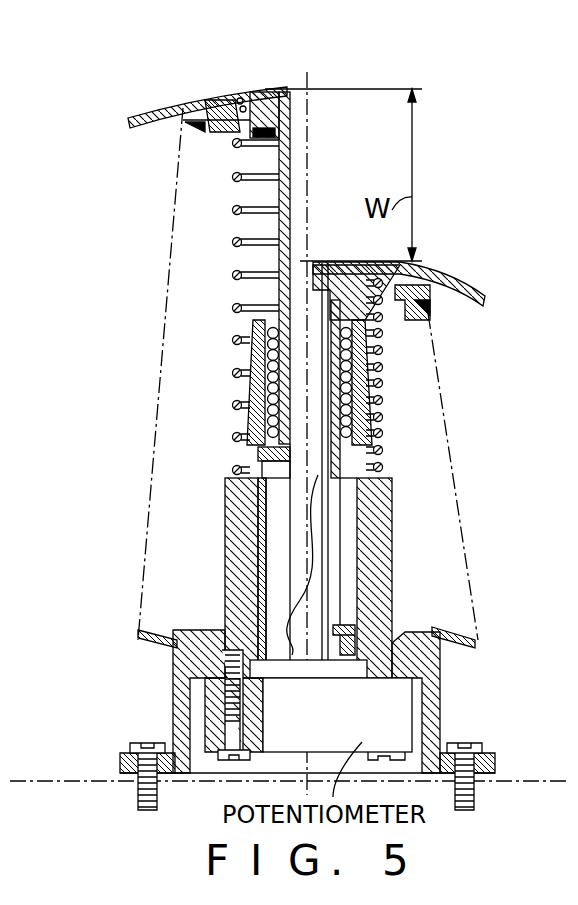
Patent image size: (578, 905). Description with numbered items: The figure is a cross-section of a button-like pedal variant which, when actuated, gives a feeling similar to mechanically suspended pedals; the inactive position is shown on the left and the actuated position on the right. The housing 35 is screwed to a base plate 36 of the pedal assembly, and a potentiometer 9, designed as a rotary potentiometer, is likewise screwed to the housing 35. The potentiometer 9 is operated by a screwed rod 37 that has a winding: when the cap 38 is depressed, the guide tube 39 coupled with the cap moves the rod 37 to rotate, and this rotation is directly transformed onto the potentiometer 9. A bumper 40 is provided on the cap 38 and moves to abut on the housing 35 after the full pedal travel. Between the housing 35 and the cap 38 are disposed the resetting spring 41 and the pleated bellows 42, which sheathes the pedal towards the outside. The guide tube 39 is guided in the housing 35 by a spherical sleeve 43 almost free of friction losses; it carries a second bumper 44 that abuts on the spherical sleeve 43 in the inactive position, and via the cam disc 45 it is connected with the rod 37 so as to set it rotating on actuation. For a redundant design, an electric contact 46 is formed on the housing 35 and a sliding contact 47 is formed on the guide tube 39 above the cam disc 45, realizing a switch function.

The potentiometer 9 is at (398, 735).
The housing 35 is at (177, 695).
The base plate 36 is at (87, 776).
The screwed rod 37 is at (312, 558).
The cap 38 is at (142, 112).
The guide tube 39 is at (250, 268).
The bumper 40 is at (252, 157).
The resetting spring 41 is at (383, 418).
The pleated bellows 42 is at (150, 643).
The spherical sleeve 43 is at (385, 375).
The second bumper 44 is at (348, 626).
The cam disc 45 is at (275, 457).
The electric contact 46 is at (258, 553).
The sliding contact 47 is at (252, 447).